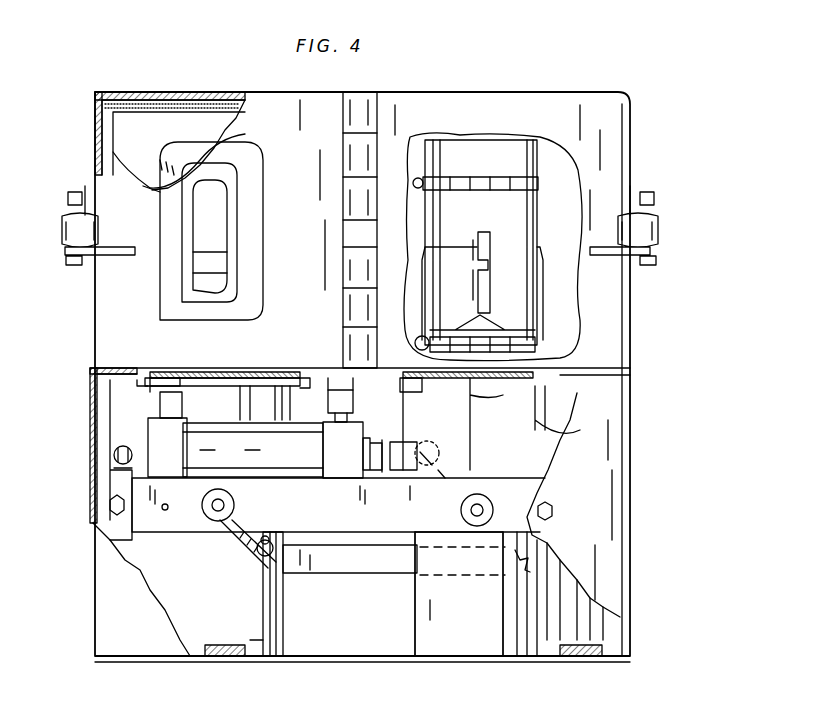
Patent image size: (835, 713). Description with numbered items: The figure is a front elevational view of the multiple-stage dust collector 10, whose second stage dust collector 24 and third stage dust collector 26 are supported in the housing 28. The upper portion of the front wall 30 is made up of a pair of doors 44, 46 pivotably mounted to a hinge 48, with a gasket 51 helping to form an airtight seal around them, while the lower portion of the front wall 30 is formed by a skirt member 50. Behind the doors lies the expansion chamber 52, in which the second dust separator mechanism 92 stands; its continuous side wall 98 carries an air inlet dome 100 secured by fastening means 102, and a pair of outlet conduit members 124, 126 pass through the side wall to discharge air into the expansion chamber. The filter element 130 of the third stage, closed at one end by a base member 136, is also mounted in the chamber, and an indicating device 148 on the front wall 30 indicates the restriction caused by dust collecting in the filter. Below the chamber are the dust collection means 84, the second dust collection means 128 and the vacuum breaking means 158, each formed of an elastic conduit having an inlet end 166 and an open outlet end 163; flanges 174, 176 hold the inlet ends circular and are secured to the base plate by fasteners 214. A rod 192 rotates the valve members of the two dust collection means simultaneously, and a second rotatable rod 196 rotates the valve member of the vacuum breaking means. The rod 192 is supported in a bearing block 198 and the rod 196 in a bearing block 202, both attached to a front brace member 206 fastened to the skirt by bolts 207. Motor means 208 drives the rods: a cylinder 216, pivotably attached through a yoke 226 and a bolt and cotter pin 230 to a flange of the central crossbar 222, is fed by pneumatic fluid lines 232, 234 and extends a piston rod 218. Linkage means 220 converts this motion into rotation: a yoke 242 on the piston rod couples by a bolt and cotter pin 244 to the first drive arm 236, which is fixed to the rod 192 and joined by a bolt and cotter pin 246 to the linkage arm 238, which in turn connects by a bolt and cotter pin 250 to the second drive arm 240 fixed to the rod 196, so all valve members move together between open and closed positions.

The multiple-stage dust collector 10 is at (667, 101).
The second stage dust collector 24 is at (537, 209).
The third stage dust collector 26 is at (204, 121).
The housing 28 is at (639, 454).
The front wall 30 is at (612, 352).
The door 44 is at (278, 115).
The door 46 is at (468, 107).
The hinge 48 is at (360, 103).
The skirt member 50 is at (598, 512).
The gasket 51 is at (95, 105).
The expansion chamber 52 is at (152, 104).
The dust collection means 84 is at (351, 626).
The second dust separator mechanism 92 is at (519, 227).
The side wall 98 is at (518, 238).
The air inlet dome 100 is at (510, 150).
The fastening means 102 is at (462, 178).
The outlet conduit member 124 is at (428, 312).
The outlet conduit member 126 is at (578, 312).
The second dust collection means 128 is at (408, 645).
The filter element 130 is at (140, 160).
The base member 136 is at (150, 190).
The indicating device 148 is at (220, 232).
The vacuum breaking means 158 is at (300, 646).
The outlet end 163 is at (262, 658).
The inlet end 166 is at (255, 380).
The flange 174 is at (472, 440).
The flange 176 is at (208, 380).
The rod 192 is at (482, 492).
The second rotatable rod 196 is at (235, 452).
The bearing block 198 is at (477, 494).
The bearing block 202 is at (235, 505).
The front brace member 206 is at (350, 540).
The bolt 207 is at (110, 505).
The motor means 208 is at (202, 403).
The fastener 214 is at (160, 398).
The cylinder 216 is at (300, 459).
The piston rod 218 is at (380, 474).
The linkage means 220 is at (388, 644).
The central crossbar 222 is at (112, 462).
The yoke 226 is at (110, 486).
The bolt and cotter pin 230 is at (114, 452).
The pneumatic fluid line 232 is at (160, 405).
The pneumatic fluid line 234 is at (338, 390).
The first drive arm 236 is at (545, 524).
The linkage arm 238 is at (280, 580).
The second drive arm 240 is at (248, 545).
The yoke 242 is at (405, 448).
The bolt and cotter pin 244 is at (440, 480).
The bolt and cotter pin 246 is at (517, 570).
The bolt and cotter pin 250 is at (262, 556).